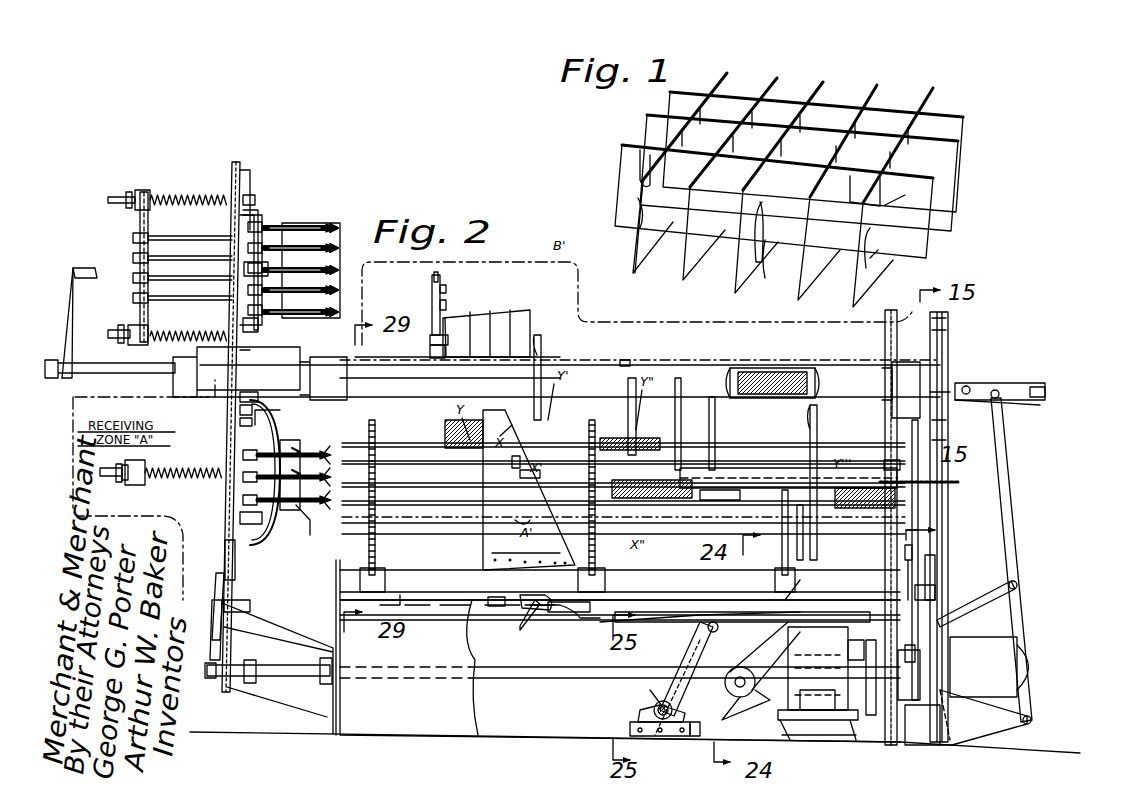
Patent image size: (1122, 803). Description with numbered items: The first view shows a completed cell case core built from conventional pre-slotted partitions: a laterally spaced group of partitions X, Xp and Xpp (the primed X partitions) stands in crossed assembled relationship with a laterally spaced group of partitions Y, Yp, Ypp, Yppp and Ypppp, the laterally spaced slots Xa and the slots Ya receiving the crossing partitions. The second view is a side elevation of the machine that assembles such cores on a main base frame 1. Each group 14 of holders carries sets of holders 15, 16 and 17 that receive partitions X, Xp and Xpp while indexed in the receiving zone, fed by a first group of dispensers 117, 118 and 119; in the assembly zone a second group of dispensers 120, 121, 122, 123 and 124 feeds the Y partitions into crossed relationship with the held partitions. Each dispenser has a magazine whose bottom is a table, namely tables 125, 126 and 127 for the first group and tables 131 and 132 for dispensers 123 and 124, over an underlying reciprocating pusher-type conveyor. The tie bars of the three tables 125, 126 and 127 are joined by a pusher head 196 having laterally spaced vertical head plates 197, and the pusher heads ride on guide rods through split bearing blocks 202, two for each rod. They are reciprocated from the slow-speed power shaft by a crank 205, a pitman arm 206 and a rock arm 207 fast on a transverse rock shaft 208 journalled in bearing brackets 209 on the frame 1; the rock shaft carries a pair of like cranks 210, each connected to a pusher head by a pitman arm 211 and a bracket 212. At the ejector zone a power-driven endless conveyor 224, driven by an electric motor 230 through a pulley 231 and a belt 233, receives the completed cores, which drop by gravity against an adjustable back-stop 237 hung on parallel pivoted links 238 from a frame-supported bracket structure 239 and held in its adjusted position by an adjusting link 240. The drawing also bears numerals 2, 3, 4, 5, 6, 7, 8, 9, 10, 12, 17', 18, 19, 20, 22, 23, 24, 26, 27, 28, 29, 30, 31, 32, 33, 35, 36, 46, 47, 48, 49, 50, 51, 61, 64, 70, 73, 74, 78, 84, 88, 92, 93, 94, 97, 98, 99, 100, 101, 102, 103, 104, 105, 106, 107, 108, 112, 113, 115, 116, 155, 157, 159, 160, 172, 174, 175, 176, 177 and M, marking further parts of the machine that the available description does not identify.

In FIG. 2, the main base frame 1 is at (410, 700).
In FIG. 2, the bracket 2 is at (300, 540).
In FIG. 2, the frame post 3 is at (882, 538).
In FIG. 2, the upper beam 4 is at (700, 372).
In FIG. 2, the guide rail 5 is at (820, 470).
In FIG. 2, the bearing housing 6 is at (185, 372).
In FIG. 2, the bearing 7 is at (323, 378).
In FIG. 2, the bracket 8 is at (901, 390).
In FIG. 2, the plate 9 is at (243, 168).
In FIG. 2, the nozzle block 10 is at (296, 356).
In FIG. 2, the vertical plate 12 is at (240, 165).
In FIG. 2, the group of holders 14 is at (306, 524).
In FIG. 2, the set of holders 15 is at (299, 454).
In FIG. 2, the set of holders 16 is at (299, 477).
In FIG. 2, the set of holders 17 is at (298, 335).
In FIG. 2, the nozzle tube 17' is at (327, 245).
In FIG. 2, the nozzle tip 18 is at (334, 230).
In FIG. 2, the clamp 19 is at (256, 224).
In FIG. 2, the coupling 20 is at (268, 268).
In FIG. 2, the bracket 22 is at (232, 598).
In FIG. 2, the clamp 23 is at (250, 400).
In FIG. 2, the bracket 24 is at (258, 325).
In FIG. 2, the bracket 26 is at (902, 572).
In FIG. 2, the bracket 27 is at (250, 197).
In FIG. 2, the tube 28 is at (193, 256).
In FIG. 2, the manifold 29 is at (298, 444).
In FIG. 2, the collar 30 is at (134, 484).
In FIG. 2, the nut 31 is at (140, 462).
In FIG. 2, the screw 32 is at (108, 198).
In FIG. 2, the rod 33 is at (133, 275).
In FIG. 2, the nut 35 is at (128, 192).
In FIG. 2, the spring 36 is at (172, 195).
In FIG. 2, the gear box 46 is at (828, 646).
In FIG. 2, the shaft 47 is at (866, 675).
In FIG. 2, the gear 48 is at (817, 699).
In FIG. 2, the coupling 49 is at (905, 700).
In FIG. 2, the base 50 is at (918, 746).
In FIG. 2, the bar 51 is at (938, 563).
In FIG. 2, the rod 61 is at (918, 530).
In FIG. 2, the block 64 is at (920, 595).
In FIG. 2, the slide 70 is at (884, 462).
In FIG. 2, the post 73 is at (930, 326).
In FIG. 2, the cap 74 is at (965, 375).
In FIG. 2, the slide block 78 is at (880, 492).
In FIG. 2, the rod 84 is at (222, 590).
In FIG. 2, the bracket 88 is at (288, 644).
In FIG. 2, the bar 92 is at (222, 618).
In FIG. 2, the collar 93 is at (212, 680).
In FIG. 2, the shaft 94 is at (297, 676).
In FIG. 2, the coupling 97 is at (856, 640).
In FIG. 2, the spring 98 is at (88, 373).
In FIG. 2, the lever 99 is at (66, 330).
In FIG. 2, the handle 100 is at (82, 268).
In FIG. 2, the pivot 101 is at (995, 390).
In FIG. 2, the pivot 102 is at (966, 386).
In FIG. 2, the rod 103 is at (1003, 452).
In FIG. 2, the arm 104 is at (1040, 384).
In FIG. 2, the link 105 is at (987, 755).
In FIG. 2, the pivot 106 is at (1032, 720).
In FIG. 2, the link 107 is at (952, 613).
In FIG. 2, the pivot 108 is at (1018, 585).
In FIG. 2, the rail 112 is at (715, 470).
In FIG. 2, the post 113 is at (636, 420).
In FIG. 2, the block 115 is at (1046, 392).
In FIG. 2, the bar 116 is at (1020, 404).
In FIG. 2, the cell case partition dispenser 117 is at (440, 447).
In FIG. 2, the cell case partition dispenser 118 is at (518, 463).
In FIG. 2, the cell case partition dispenser 119 is at (680, 445).
In FIG. 2, the cell case partition dispenser 120 is at (508, 311).
In FIG. 2, the cell case partition dispenser 121 is at (543, 346).
In FIG. 2, the cell case partition dispenser 122 is at (627, 358).
In FIG. 2, the cell case partition dispenser 123 is at (713, 428).
In FIG. 2, the cell case partition dispenser 124 is at (820, 418).
In FIG. 2, the table 125 is at (442, 462).
In FIG. 2, the table 126 is at (522, 476).
In FIG. 2, the table 127 is at (480, 503).
In FIG. 2, the table 131 is at (742, 500).
In FIG. 2, the table 132 is at (803, 540).
In FIG. 2, the lower beam 155 is at (440, 594).
In FIG. 2, the bearing block 157 is at (320, 565).
In FIG. 2, the threaded rod 159 is at (382, 560).
In FIG. 2, the rail 160 is at (450, 486).
In FIG. 2, the block 172 is at (582, 614).
In FIG. 2, the pivot 174 is at (672, 706).
In FIG. 2, the bracket 175 is at (680, 715).
In FIG. 2, the pulley 176 is at (760, 634).
In FIG. 2, the link 177 is at (808, 590).
In FIG. 2, the pusher head 196 is at (478, 541).
In FIG. 2, the vertical head plates 197 is at (526, 545).
In FIG. 2, the split bearing blocks 202 is at (487, 600).
In FIG. 2, the crank 205 is at (780, 616).
In FIG. 2, the pitman arm 206 is at (700, 660).
In FIG. 2, the rock arm 207 is at (655, 698).
In FIG. 2, the rock shaft 208 is at (632, 724).
In FIG. 2, the bearing brackets 209 is at (702, 728).
In FIG. 2, the cranks 210 is at (698, 640).
In FIG. 2, the pitman arm 211 is at (550, 618).
In FIG. 2, the bracket 212 is at (522, 606).
In FIG. 2, the endless conveyor 224 is at (370, 356).
In FIG. 2, the electric motor 230 is at (512, 325).
In FIG. 2, the pulley 231 is at (436, 342).
In FIG. 2, the belt 233 is at (436, 352).
In FIG. 2, the adjustable back-stop 237 is at (432, 296).
In FIG. 2, the pivoted links 238 is at (436, 280).
In FIG. 2, the bracket structure 239 is at (444, 289).
In FIG. 2, the adjusting link 240 is at (444, 305).
In FIG. 1, the cell case partition X is at (905, 195).
In FIG. 1, the cell case partition Xp is at (940, 170).
In FIG. 1, the cell case partition Xpp is at (963, 133).
In FIG. 1, the slots Xa is at (640, 163).
In FIG. 1, the cell case partition Y is at (935, 91).
In FIG. 1, the cell case partition Yp is at (878, 88).
In FIG. 1, the cell case partition Ypp is at (824, 84).
In FIG. 1, the cell case partition Yppp is at (780, 80).
In FIG. 1, the cell case partition Ypppp is at (730, 74).
In FIG. 1, the slots Ya is at (766, 250).
In FIG. 2, the motor M is at (989, 667).